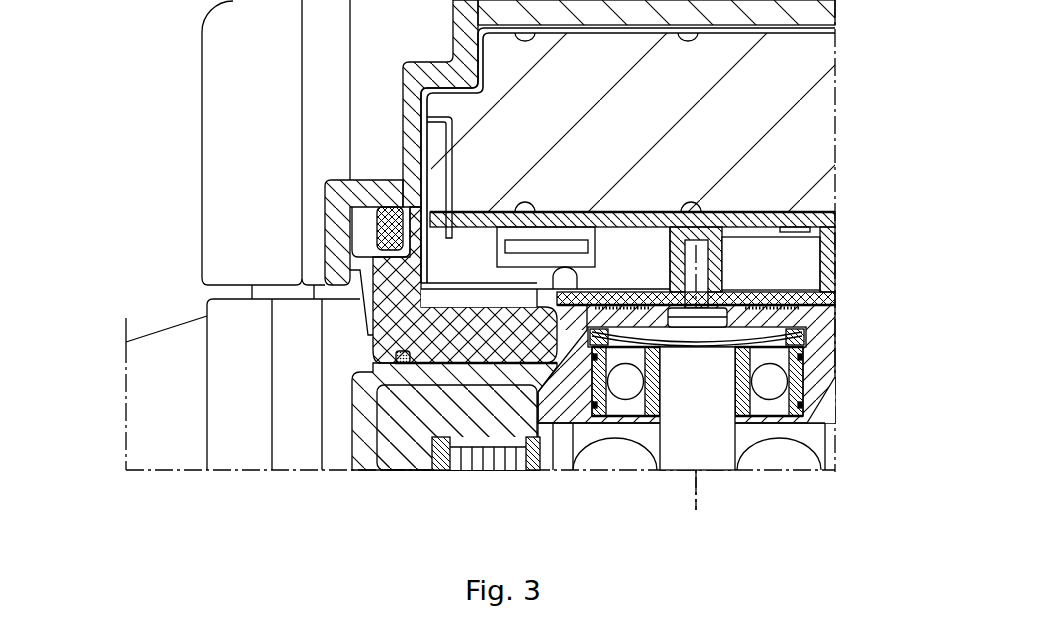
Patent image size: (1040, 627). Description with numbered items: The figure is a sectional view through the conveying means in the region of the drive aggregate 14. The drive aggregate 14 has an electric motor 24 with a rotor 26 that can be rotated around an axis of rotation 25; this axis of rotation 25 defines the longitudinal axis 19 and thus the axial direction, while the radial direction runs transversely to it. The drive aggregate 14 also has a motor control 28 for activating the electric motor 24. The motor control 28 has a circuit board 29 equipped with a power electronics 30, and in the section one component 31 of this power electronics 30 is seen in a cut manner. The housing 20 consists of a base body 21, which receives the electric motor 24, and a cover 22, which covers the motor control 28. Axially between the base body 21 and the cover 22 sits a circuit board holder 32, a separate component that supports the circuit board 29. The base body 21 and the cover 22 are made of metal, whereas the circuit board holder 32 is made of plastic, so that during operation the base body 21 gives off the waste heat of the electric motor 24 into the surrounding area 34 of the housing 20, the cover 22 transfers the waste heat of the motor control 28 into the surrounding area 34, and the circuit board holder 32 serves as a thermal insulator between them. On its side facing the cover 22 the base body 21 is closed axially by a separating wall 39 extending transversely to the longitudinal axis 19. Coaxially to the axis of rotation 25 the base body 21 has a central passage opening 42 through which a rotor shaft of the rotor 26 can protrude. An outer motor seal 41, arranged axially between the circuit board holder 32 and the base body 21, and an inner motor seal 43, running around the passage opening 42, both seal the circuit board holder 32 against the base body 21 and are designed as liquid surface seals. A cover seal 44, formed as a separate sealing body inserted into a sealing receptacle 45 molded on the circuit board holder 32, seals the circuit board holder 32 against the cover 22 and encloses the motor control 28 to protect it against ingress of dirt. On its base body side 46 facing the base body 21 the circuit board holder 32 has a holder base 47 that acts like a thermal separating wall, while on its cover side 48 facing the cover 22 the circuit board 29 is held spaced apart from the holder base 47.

The drive aggregate 14 is at (140, 62).
The longitudinal axis 19 is at (700, 490).
The housing 20 is at (157, 316).
The base body 21 is at (192, 388).
The cover 22 is at (187, 152).
The electric motor 24 is at (845, 445).
The axis of rotation 25 is at (700, 490).
The rotor 26 is at (731, 407).
The motor control 28 is at (838, 125).
The circuit board 29 is at (513, 203).
The power electronics 30 is at (578, 210).
The component of the power electronics 31 is at (678, 111).
The circuit board holder 32 is at (359, 320).
The surrounding area 34 is at (152, 222).
The separating wall 39 is at (484, 380).
The outer motor seal 41 is at (395, 364).
The central passage opening 42 is at (686, 322).
The inner motor seal 43 is at (780, 297).
The cover seal 44 is at (382, 206).
The sealing receptacle 45 is at (365, 222).
The base body side 46 is at (812, 312).
The holder base 47 is at (752, 298).
The cover side 48 is at (641, 298).